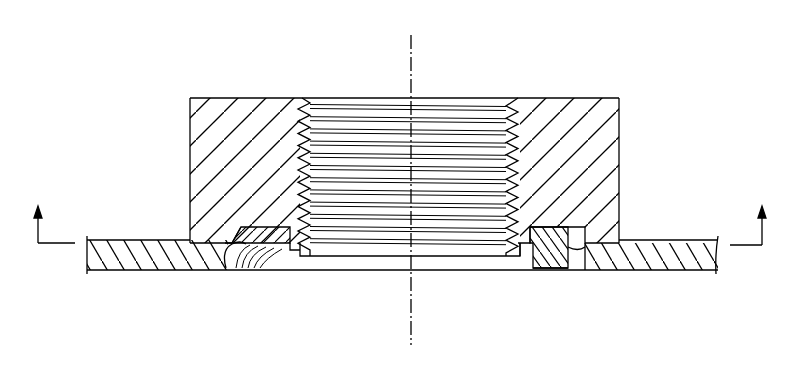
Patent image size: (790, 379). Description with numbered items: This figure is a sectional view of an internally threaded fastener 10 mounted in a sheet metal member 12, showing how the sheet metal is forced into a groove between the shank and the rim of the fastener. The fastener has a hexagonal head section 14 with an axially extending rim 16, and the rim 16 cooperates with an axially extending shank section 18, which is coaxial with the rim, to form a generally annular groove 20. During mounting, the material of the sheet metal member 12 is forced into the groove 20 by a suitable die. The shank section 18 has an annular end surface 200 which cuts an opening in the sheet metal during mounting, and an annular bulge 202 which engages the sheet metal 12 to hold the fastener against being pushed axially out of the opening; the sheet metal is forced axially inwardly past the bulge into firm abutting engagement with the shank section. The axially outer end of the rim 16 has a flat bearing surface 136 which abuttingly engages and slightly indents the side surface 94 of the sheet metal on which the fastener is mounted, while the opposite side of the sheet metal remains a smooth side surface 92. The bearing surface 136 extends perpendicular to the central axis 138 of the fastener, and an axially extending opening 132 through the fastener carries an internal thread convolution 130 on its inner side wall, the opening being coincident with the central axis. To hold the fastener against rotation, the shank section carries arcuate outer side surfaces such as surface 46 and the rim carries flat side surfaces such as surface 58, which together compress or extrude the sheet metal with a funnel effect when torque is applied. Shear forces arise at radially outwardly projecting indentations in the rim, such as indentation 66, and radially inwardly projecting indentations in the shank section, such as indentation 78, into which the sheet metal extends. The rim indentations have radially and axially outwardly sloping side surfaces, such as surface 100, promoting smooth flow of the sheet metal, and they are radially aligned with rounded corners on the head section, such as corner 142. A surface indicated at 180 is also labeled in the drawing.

The internally threaded fastener 10 is at (242, 58).
The sheet metal member 12 is at (142, 236).
The hexagonal head section 14 is at (578, 96).
The axially extending rim 16 is at (608, 236).
The axially extending shank section 18 is at (303, 258).
The generally annular groove 20 is at (268, 258).
The arcuate outer side surface 46 is at (545, 264).
The flat side surface 58 is at (574, 236).
The radially outwardly projecting indentation 66 is at (232, 252).
The radially inwardly projecting indentation 78 is at (288, 224).
The smooth side surface 92 is at (133, 270).
The side surface 94 is at (108, 240).
The sloping side surface 100 is at (230, 232).
The internal thread convolution 130 is at (446, 126).
The axially extending opening 132 is at (348, 96).
The flat bearing surface 136 is at (575, 262).
The central axis 138 is at (418, 288).
The rounded corner 142 is at (190, 130).
The nut outer surface 180 is at (619, 136).
The annular end surface 200 is at (527, 258).
The annular bulge 202 is at (282, 270).